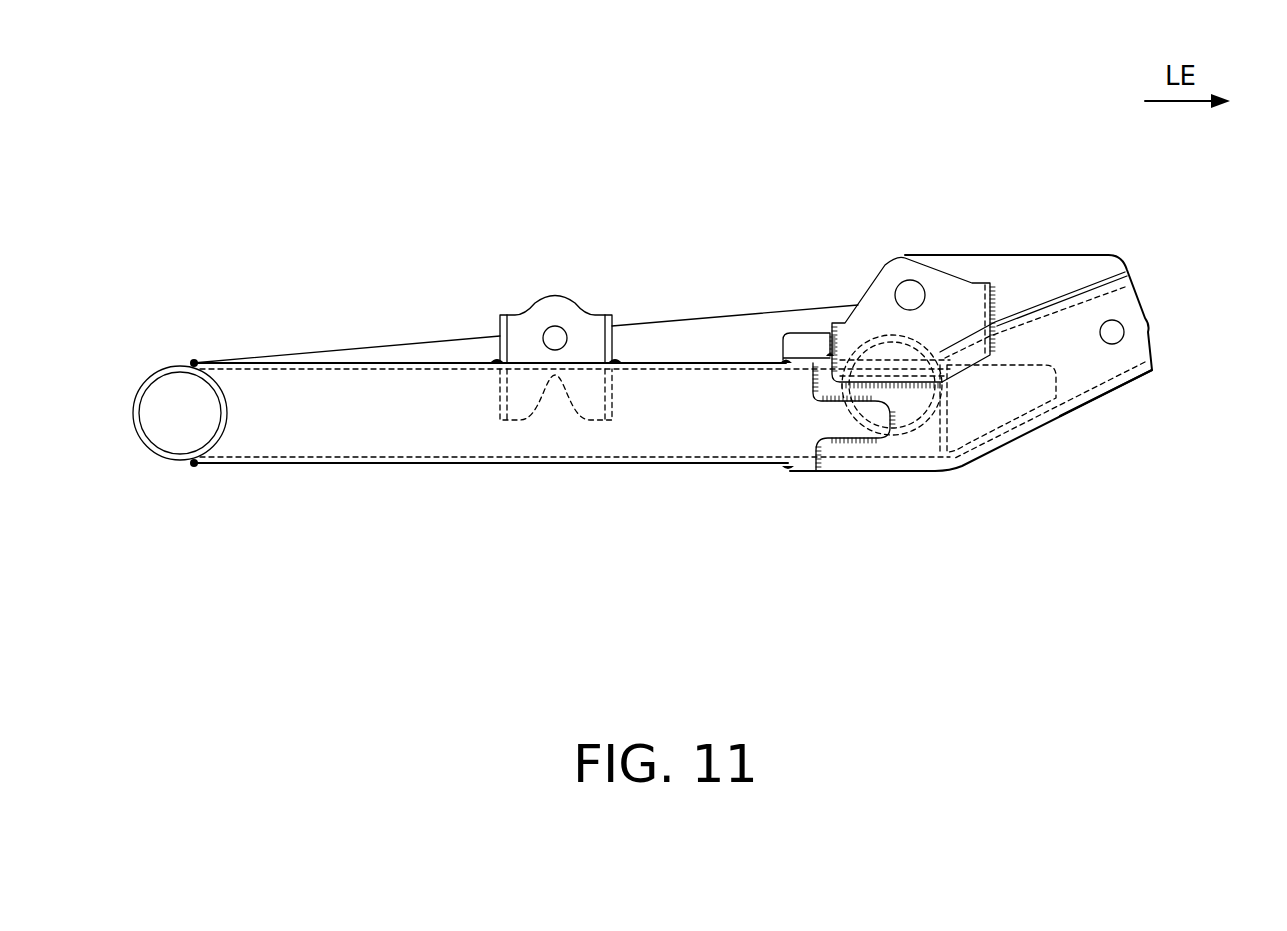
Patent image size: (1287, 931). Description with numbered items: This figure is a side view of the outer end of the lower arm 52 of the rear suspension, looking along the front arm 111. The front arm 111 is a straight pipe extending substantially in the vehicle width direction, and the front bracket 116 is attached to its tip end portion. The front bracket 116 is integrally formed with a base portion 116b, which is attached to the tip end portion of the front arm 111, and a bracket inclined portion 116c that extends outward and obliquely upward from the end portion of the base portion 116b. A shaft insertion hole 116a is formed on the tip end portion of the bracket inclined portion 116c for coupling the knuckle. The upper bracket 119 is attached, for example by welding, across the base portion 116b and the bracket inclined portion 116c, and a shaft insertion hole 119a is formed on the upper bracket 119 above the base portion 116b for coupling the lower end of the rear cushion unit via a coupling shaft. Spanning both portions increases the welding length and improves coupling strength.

The lower arm 52 is at (302, 293).
The front arm 111 is at (445, 438).
The front bracket 116 is at (1058, 430).
The shaft insertion hole 116a is at (1118, 340).
The base portion 116b is at (893, 452).
The bracket inclined portion 116c is at (1095, 405).
The upper bracket 119 is at (868, 278).
The shaft insertion hole 119a is at (907, 290).